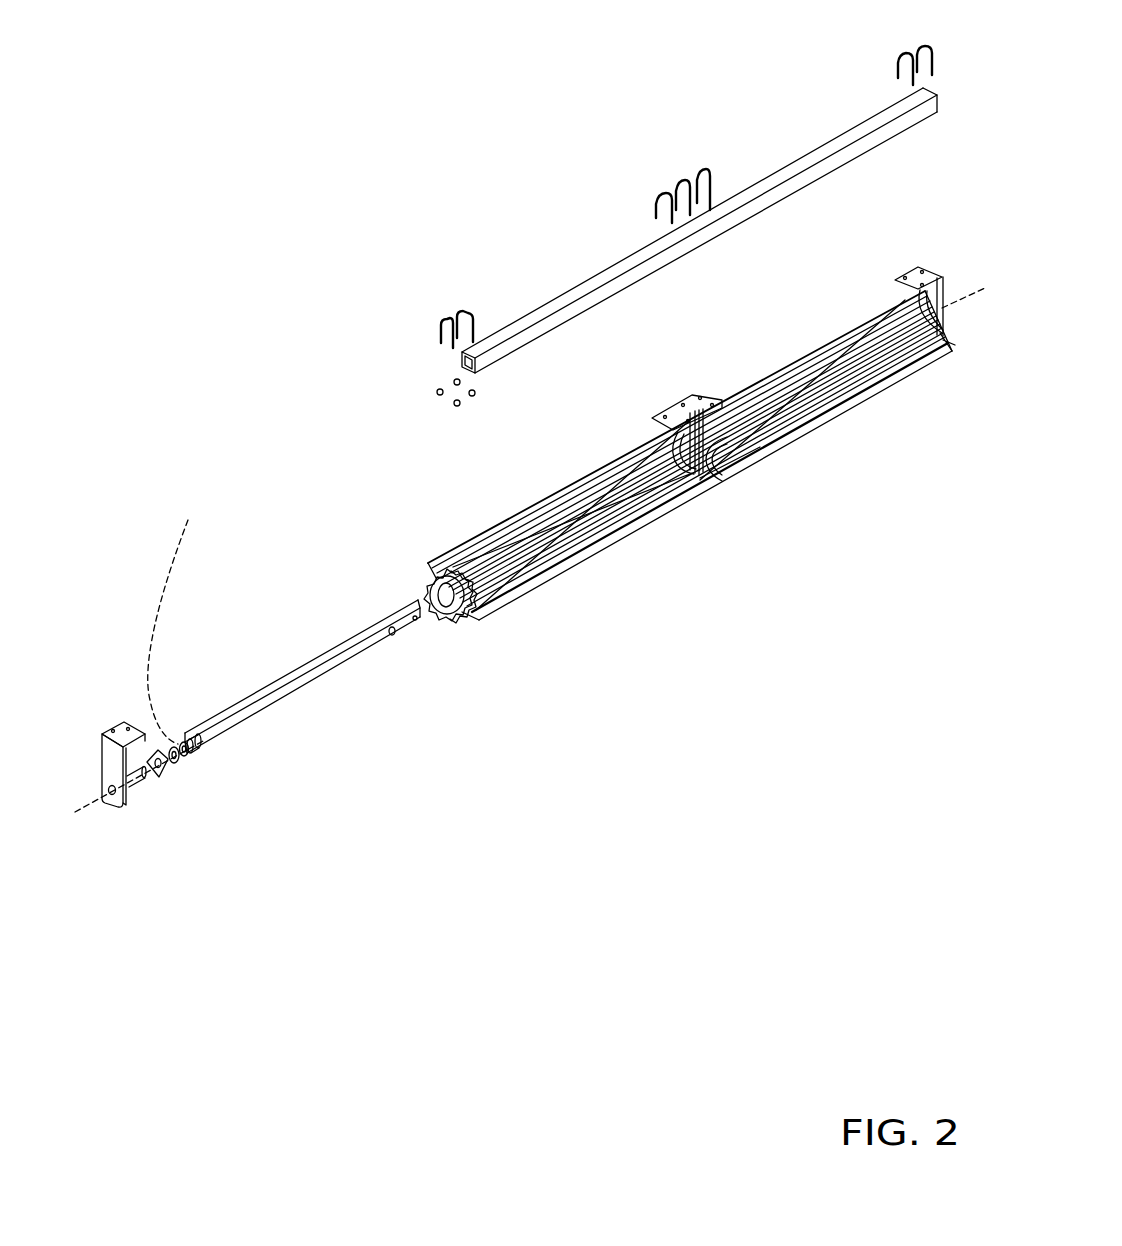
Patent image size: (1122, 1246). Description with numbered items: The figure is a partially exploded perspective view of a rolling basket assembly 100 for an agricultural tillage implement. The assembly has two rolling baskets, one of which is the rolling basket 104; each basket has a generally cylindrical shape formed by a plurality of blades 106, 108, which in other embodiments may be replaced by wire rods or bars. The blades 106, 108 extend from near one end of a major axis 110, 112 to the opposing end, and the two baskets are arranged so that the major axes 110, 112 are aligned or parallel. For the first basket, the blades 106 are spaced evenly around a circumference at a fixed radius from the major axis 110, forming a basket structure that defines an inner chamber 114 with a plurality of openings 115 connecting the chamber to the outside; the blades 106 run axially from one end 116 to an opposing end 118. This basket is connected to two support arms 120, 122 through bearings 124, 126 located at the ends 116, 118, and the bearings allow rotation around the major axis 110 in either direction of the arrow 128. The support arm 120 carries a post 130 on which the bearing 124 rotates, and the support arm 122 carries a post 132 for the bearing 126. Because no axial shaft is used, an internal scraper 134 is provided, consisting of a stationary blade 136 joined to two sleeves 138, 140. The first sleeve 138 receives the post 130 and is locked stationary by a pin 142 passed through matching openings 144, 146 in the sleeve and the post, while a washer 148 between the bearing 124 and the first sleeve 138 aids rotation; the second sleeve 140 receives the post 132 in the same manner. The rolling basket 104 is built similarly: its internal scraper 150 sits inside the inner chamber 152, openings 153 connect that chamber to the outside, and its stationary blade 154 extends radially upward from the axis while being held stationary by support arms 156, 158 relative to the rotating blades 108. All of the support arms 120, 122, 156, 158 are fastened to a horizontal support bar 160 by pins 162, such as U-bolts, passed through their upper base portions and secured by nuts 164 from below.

The rolling basket assembly 100 is at (318, 275).
The rolling basket 104 is at (825, 488).
The blades 106 is at (497, 610).
The blades 108 is at (723, 460).
The major axis 110 is at (82, 815).
The major axis 112 is at (955, 298).
The inner chamber 114 is at (563, 530).
The openings 115 is at (605, 527).
The end 116 is at (453, 632).
The end 118 is at (683, 478).
The support arm 120 is at (120, 720).
The support arm 122 is at (670, 402).
The bearing 124 is at (197, 790).
The bearing 126 is at (680, 488).
The arrow 128 is at (188, 520).
The post 130 is at (158, 772).
The post 132 is at (633, 473).
The internal scraper 134 is at (297, 640).
The stationary blade 136 is at (340, 650).
The first sleeve 138 is at (200, 743).
The second sleeve 140 is at (392, 635).
The pin 142 is at (250, 768).
The opening 144 is at (210, 757).
The opening 146 is at (128, 775).
The washer 148 is at (174, 747).
The internal scraper 150 is at (853, 340).
The inner chamber 152 is at (778, 407).
The openings 153 is at (847, 387).
The stationary blade 154 is at (863, 347).
The support arm 156 is at (650, 407).
The support arm 158 is at (930, 265).
The bar 160 is at (775, 172).
The pins 162 is at (898, 61).
The nuts 164 is at (450, 412).